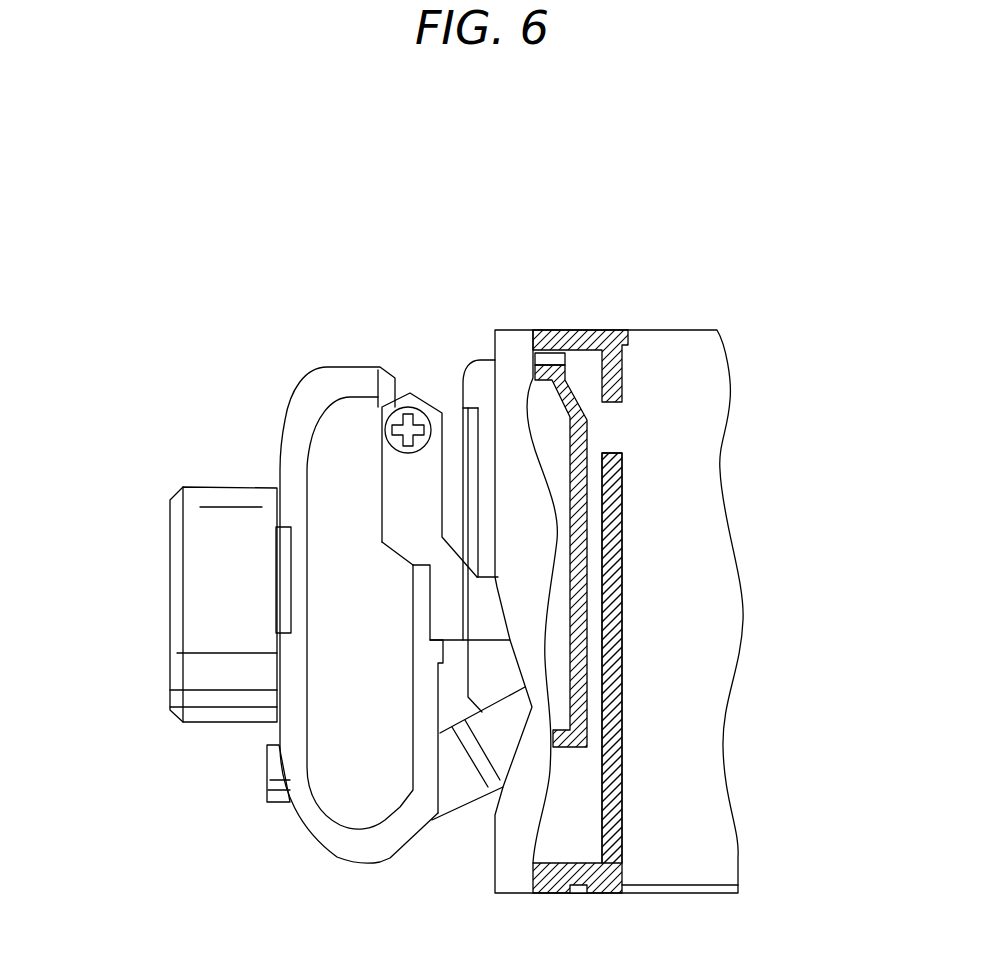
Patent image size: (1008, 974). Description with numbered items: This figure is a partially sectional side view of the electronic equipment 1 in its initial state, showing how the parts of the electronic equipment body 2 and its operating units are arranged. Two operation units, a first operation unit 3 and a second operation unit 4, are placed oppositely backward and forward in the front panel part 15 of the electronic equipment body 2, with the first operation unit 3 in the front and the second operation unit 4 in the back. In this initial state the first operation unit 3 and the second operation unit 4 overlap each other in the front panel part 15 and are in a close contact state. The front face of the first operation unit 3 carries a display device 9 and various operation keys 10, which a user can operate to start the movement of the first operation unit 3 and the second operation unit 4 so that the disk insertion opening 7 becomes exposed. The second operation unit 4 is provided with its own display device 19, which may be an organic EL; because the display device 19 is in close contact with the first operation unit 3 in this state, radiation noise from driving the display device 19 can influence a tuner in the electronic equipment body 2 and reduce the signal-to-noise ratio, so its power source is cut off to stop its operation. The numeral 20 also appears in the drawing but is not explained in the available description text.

The electronic equipment 1 is at (588, 292).
The electronic equipment body 2 is at (699, 322).
The first operation unit 3 is at (337, 368).
The second operation unit 4 is at (478, 361).
The disk insertion opening 7 is at (617, 425).
The display device 9 is at (280, 553).
The operation keys 10 is at (175, 605).
The front panel part 15 is at (617, 588).
The display device 19 is at (460, 415).
The terminal 20 is at (477, 803).